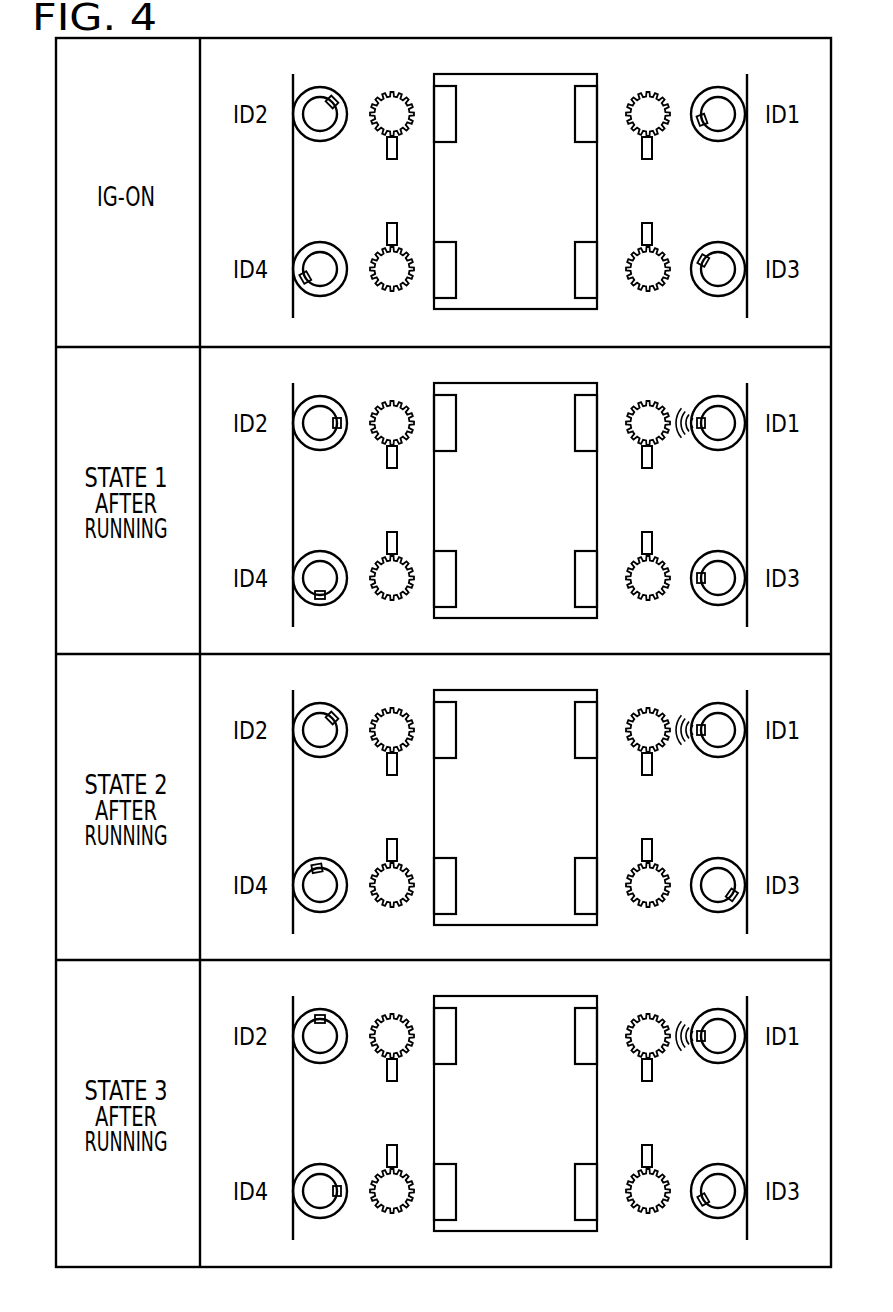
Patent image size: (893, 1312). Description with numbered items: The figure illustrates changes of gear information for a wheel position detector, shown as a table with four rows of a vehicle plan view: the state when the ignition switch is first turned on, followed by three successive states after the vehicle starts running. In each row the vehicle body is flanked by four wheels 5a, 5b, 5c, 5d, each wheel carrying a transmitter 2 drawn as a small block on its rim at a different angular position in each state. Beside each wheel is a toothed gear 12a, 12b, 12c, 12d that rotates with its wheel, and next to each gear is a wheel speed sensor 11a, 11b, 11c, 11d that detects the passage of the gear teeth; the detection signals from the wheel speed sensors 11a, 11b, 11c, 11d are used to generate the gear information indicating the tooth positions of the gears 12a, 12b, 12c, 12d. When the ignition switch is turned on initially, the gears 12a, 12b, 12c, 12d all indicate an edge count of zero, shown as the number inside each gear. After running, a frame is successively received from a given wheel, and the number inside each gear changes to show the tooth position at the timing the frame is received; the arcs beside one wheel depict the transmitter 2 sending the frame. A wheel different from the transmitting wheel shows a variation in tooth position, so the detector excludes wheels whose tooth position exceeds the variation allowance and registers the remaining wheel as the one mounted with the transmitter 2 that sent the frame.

The transmitter 2 is at (336, 98).
The wheel 5a is at (716, 87).
The wheel 5b is at (319, 87).
The wheel 5c is at (716, 242).
The wheel 5d is at (319, 242).
The wheel speed sensor 11a is at (652, 150).
The wheel speed sensor 11b is at (387, 146).
The wheel speed sensor 11c is at (642, 233).
The wheel speed sensor 11d is at (387, 233).
The gear 12a is at (640, 95).
The gear 12b is at (393, 92).
The gear 12c is at (644, 292).
The gear 12d is at (388, 292).